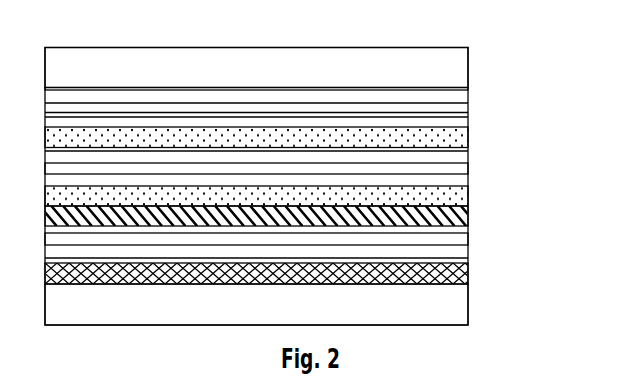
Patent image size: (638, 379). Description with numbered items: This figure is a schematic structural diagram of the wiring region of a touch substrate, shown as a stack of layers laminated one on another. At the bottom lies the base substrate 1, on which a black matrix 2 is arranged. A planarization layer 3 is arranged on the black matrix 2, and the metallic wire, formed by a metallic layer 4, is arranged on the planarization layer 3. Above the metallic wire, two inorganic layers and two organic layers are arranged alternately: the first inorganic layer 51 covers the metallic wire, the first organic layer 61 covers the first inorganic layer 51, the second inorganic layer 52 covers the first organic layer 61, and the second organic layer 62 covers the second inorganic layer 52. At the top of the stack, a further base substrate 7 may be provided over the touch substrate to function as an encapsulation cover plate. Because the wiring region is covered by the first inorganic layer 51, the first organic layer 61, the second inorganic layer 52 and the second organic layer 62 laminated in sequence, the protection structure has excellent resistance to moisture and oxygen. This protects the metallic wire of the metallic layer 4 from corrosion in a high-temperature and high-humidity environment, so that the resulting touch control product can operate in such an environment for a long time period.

The base substrate 1 is at (468, 302).
The black matrix 2 is at (468, 275).
The planarization layer 3 is at (468, 243).
The metallic layer 4 is at (468, 213).
The first inorganic layer 51 is at (468, 193).
The second inorganic layer 52 is at (468, 137).
The first organic layer 61 is at (468, 167).
The second organic layer 62 is at (468, 89).
The base substrate 7 is at (438, 48).